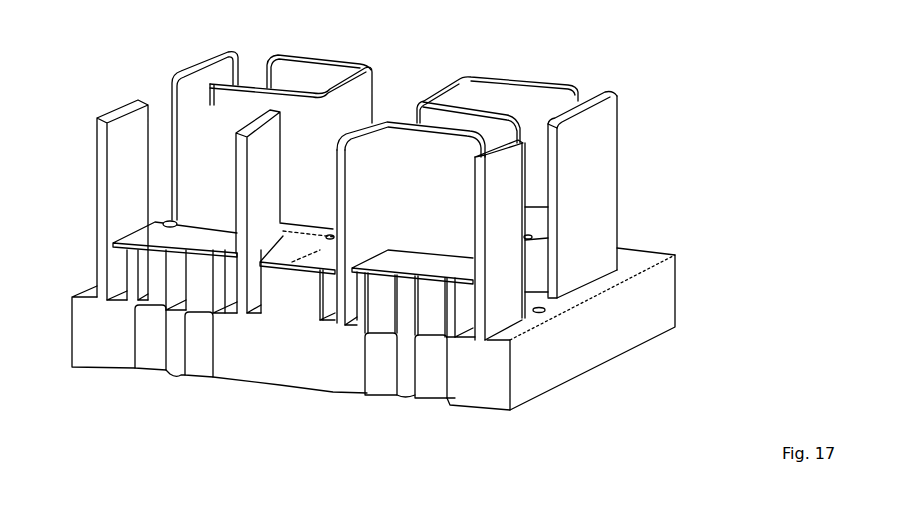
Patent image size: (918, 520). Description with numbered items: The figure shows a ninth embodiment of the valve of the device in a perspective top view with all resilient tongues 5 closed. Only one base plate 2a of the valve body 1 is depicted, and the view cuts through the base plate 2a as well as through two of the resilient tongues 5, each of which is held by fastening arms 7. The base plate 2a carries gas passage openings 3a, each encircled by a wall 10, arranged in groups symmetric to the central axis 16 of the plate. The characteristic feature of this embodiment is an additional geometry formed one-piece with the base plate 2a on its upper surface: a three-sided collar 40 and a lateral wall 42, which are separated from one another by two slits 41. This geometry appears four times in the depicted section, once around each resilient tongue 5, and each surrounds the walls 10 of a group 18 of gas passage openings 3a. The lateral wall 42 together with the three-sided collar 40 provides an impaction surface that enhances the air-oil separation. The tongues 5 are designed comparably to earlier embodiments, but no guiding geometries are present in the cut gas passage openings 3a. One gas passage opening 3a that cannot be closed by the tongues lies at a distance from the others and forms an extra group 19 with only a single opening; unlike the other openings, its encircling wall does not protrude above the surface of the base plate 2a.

The valve body 1 is at (640, 260).
The base plate 2a is at (662, 280).
The gas passage openings 3a is at (548, 312).
The resilient tongue 5 is at (530, 243).
The fastening arms 7 is at (283, 237).
The wall 10 is at (447, 317).
The central axis 16 is at (308, 255).
The group of gas passage openings and/or closed channels 18 is at (155, 393).
The group of closed channels 19 is at (558, 313).
The 3-sided collar 40 is at (523, 105).
The slit 41 is at (535, 187).
The lateral wall 42 is at (500, 295).